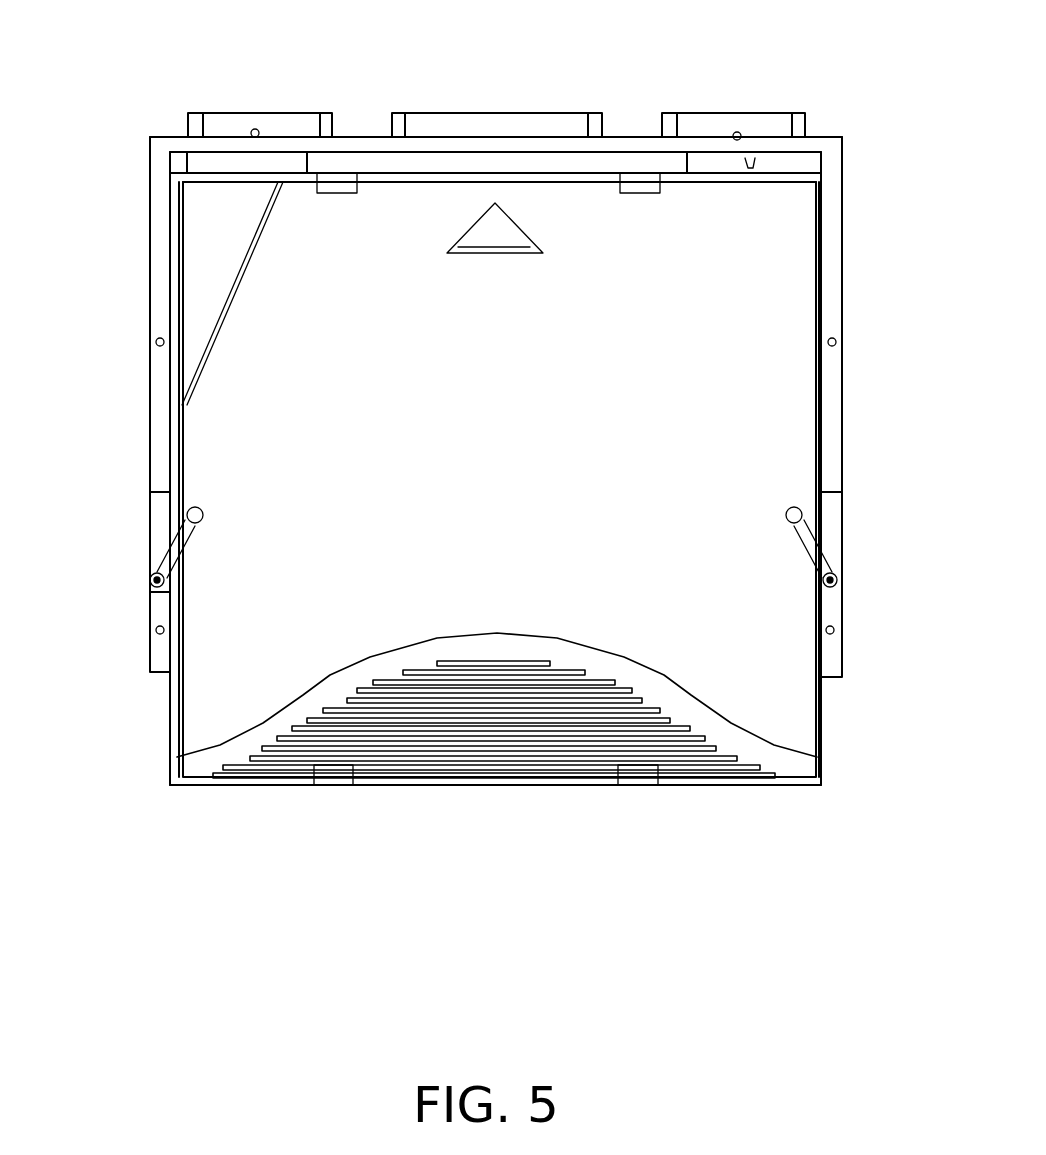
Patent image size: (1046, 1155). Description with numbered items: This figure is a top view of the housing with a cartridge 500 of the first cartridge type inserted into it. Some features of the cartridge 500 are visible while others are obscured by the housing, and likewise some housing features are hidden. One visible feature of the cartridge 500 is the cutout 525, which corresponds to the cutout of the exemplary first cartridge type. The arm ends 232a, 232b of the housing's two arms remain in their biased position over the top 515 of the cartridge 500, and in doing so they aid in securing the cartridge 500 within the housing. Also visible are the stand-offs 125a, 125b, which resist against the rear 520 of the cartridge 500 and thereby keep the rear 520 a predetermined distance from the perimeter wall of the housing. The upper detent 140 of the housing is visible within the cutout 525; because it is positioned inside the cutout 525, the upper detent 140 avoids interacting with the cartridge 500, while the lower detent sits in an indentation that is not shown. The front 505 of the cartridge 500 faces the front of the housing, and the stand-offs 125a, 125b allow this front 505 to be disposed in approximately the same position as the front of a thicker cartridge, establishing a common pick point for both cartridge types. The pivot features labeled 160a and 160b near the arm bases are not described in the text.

The cartridge 500 is at (210, 423).
The stand-off 125a is at (222, 160).
The stand-off 125b is at (750, 165).
The upper detent 140 is at (196, 184).
The rear 520 is at (470, 182).
The cutout 525 is at (200, 275).
The top 515 is at (693, 335).
The first latch pivot 160a is at (838, 593).
The second latch pivot 160b is at (150, 583).
The end portion of arm 232a is at (772, 535).
The end portion of arm 232b is at (210, 540).
The front 505 is at (602, 787).